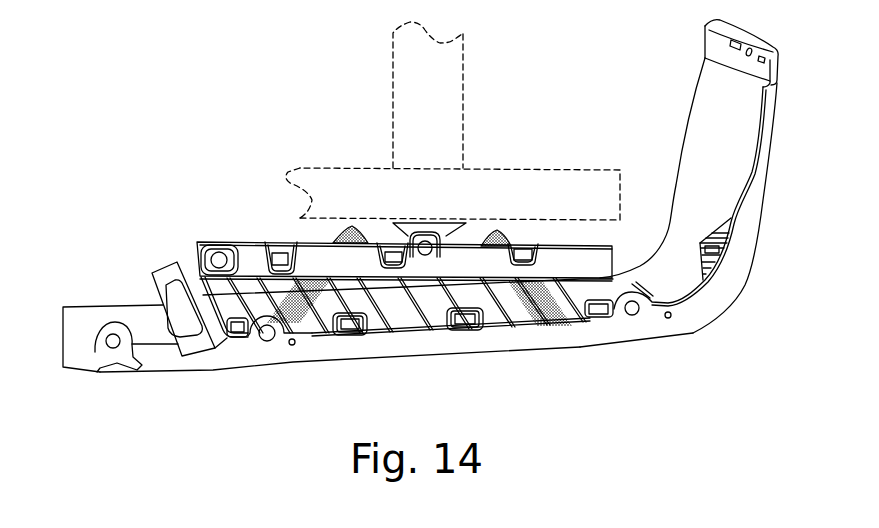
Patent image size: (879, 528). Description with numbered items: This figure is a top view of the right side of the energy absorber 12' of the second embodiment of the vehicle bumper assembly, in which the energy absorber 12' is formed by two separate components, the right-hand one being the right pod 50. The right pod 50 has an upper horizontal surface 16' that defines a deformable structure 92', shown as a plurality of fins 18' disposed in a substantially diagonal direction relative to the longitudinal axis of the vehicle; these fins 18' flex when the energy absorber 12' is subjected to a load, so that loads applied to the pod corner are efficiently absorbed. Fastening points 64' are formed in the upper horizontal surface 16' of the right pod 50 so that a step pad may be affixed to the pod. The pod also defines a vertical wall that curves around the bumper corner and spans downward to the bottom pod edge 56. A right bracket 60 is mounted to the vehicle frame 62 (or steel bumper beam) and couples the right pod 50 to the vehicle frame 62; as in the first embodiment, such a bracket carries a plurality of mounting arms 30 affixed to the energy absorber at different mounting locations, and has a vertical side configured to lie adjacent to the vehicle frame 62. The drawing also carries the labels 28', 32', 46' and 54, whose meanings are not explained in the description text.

The energy absorber 12' is at (404, 233).
The upper horizontal surface 16' is at (515, 196).
The plurality of fins 18' is at (317, 346).
The attachment opening 28' is at (446, 188).
The mounting arms 30 is at (320, 338).
The mounting boss 32' is at (620, 343).
The base plate 46' is at (407, 372).
The right pod 50 is at (716, 311).
The lower flange 54 is at (698, 333).
The bottom pod edge 56 is at (115, 307).
The right bracket 60 is at (436, 226).
The vehicle frame 62 is at (463, 72).
The fastening points 64' is at (294, 205).
The deformable structure 92' is at (492, 346).